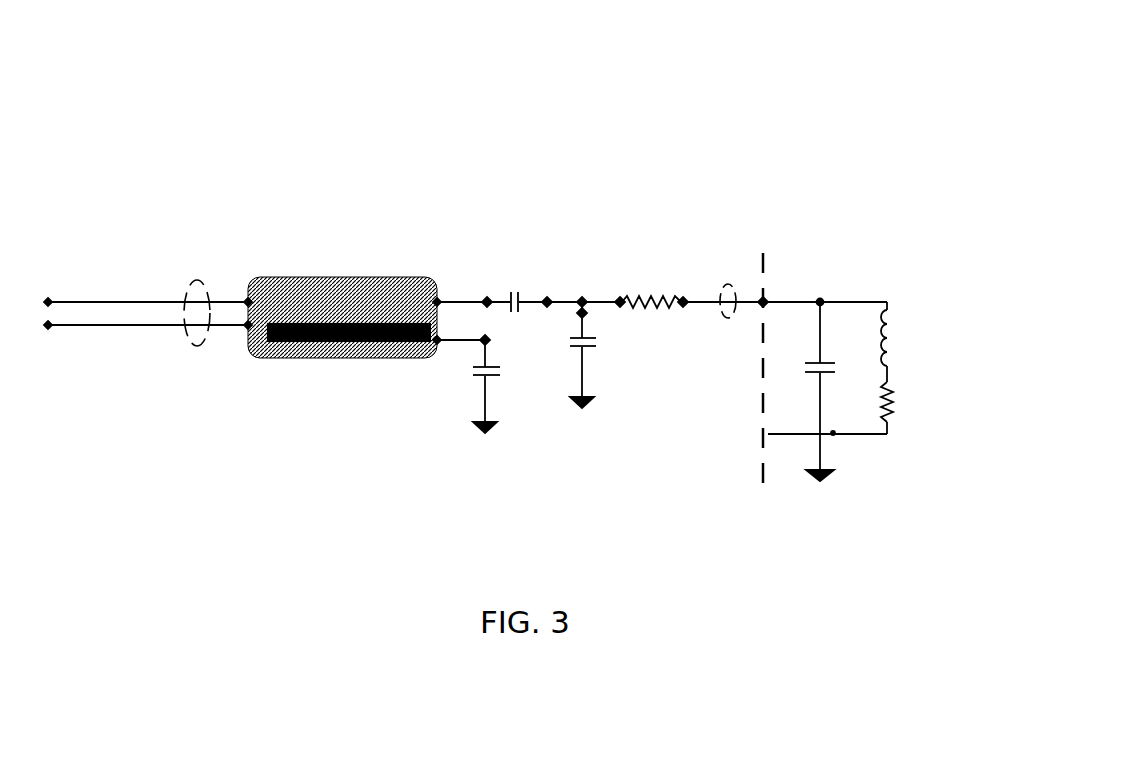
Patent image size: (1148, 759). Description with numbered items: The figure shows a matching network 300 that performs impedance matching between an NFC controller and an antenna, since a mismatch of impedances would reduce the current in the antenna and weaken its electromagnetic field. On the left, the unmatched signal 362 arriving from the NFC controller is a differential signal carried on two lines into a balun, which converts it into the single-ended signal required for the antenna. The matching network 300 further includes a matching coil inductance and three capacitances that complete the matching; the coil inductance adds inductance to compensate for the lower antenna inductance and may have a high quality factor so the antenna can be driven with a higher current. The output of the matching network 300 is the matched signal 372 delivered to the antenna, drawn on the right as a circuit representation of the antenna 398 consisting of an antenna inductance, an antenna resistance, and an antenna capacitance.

The matching network 300 is at (607, 78).
The unmatched signal 362 is at (196, 286).
The matched signal 372 is at (726, 285).
The circuit representation of the antenna 398 is at (816, 516).